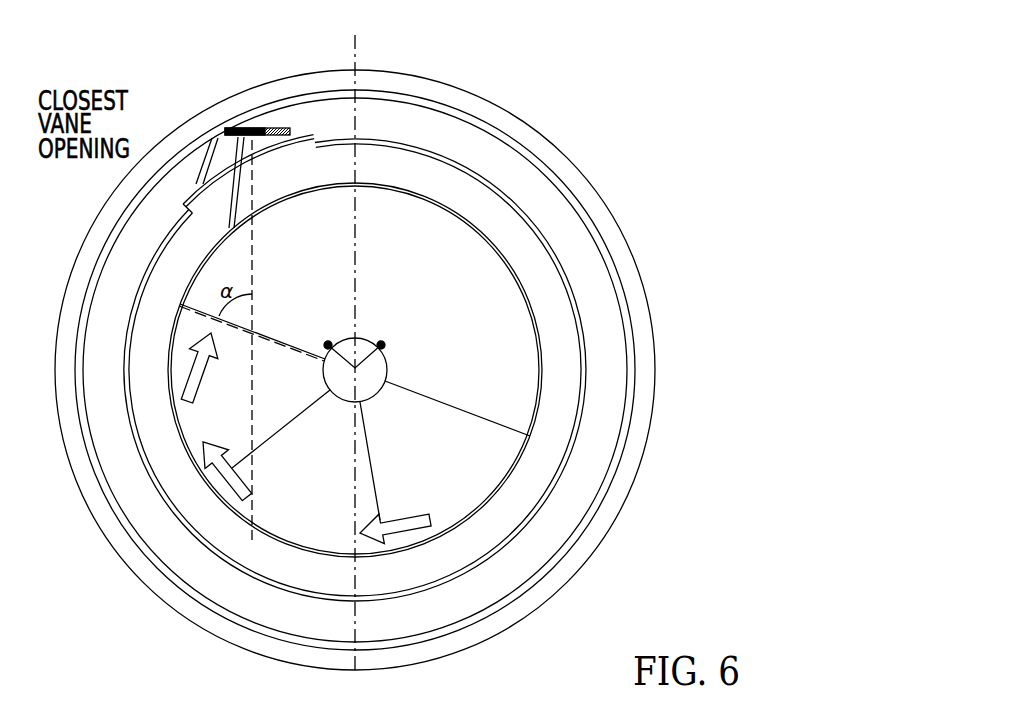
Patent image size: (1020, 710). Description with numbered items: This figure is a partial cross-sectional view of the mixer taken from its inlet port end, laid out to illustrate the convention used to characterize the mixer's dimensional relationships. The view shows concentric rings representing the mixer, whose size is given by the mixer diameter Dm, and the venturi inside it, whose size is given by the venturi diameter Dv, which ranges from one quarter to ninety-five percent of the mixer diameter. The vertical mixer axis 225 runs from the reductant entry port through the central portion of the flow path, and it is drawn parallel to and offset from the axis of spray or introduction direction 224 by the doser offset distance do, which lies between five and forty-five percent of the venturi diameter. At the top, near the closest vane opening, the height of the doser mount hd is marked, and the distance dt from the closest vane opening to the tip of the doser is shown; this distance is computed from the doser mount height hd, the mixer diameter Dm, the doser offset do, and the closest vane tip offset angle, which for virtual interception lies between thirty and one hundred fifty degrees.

The introduction direction 224 is at (243, 507).
The mixer axis 225 is at (352, 57).
The mixer diameter Dm is at (845, 590).
The venturi diameter Dv is at (745, 544).
The height of doser mount hd is at (227, 165).
The doser offset distance do is at (355, 119).
The distance from closest vane opening to tip of doser dt is at (264, 137).